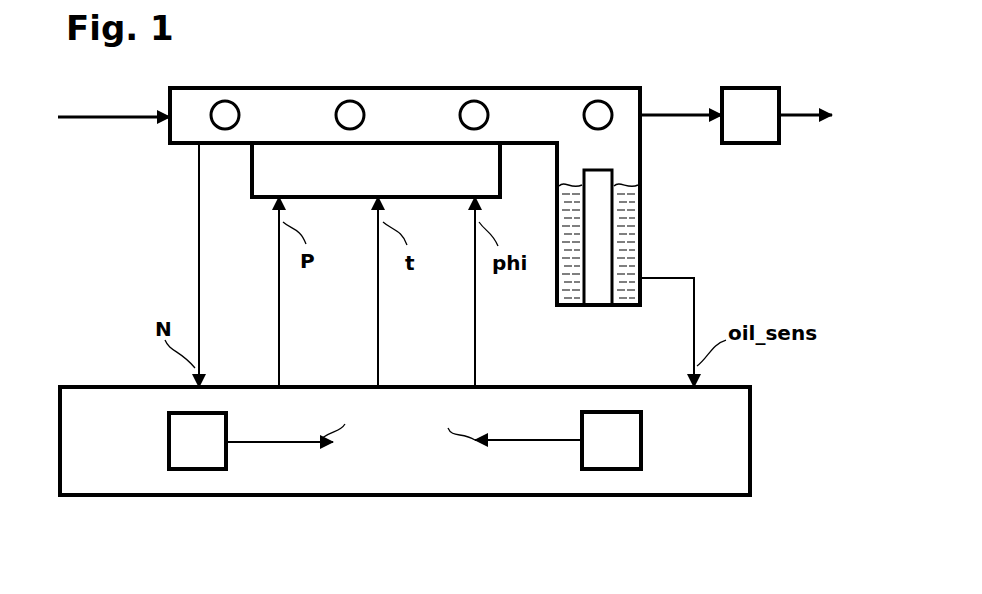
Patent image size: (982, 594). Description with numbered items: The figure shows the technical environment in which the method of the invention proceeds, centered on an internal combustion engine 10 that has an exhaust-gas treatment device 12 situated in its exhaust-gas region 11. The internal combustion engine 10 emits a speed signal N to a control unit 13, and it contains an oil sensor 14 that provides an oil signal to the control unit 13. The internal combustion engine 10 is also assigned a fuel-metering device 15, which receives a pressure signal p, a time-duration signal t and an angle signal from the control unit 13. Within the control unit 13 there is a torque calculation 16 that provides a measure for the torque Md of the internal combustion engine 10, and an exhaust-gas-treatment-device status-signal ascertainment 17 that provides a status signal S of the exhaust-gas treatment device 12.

The internal combustion engine 10 is at (371, 88).
The exhaust-gas region 11 is at (706, 90).
The exhaust-gas treatment device 12 is at (751, 128).
The control unit 13 is at (100, 395).
The oil sensor 14 is at (603, 217).
The fuel-metering device 15 is at (258, 166).
The torque calculation 16 is at (176, 433).
The exhaust-gas-treatment-device status-signal ascertainment 17 is at (630, 435).